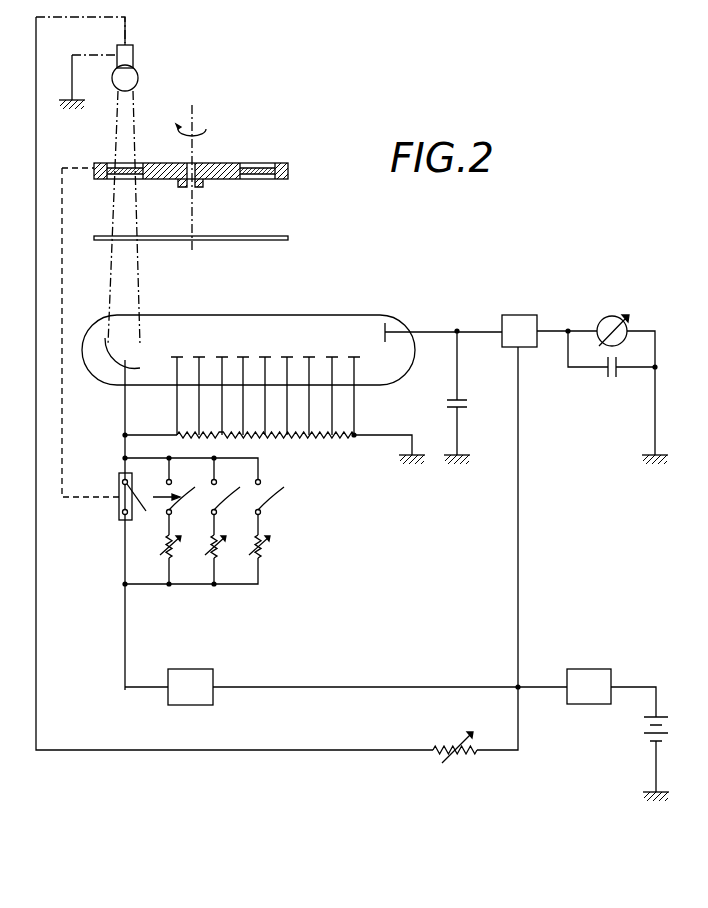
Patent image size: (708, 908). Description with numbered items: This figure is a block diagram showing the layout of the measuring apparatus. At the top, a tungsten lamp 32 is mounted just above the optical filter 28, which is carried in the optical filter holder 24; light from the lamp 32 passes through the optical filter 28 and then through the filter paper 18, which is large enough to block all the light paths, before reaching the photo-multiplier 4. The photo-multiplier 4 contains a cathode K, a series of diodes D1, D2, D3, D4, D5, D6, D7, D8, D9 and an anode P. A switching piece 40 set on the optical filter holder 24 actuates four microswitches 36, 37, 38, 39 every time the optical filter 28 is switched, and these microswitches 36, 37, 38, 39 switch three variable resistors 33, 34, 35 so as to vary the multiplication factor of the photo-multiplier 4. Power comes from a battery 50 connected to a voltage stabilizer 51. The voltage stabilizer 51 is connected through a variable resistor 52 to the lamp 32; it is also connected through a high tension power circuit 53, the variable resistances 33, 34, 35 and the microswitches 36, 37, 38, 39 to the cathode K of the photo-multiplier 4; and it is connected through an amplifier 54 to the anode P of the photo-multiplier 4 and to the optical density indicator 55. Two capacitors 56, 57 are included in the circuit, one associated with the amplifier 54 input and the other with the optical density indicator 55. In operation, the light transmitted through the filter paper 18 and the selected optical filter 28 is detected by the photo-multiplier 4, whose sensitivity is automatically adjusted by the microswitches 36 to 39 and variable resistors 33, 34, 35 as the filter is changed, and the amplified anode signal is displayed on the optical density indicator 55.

The tungsten lamp 32 is at (138, 74).
The optical filter holder 24 is at (212, 162).
The optical filter 28 is at (256, 164).
The filter paper 18 is at (282, 235).
The photo-multiplier 4 is at (406, 378).
The cathode K is at (104, 354).
The anode P is at (390, 331).
The diode D1 is at (177, 356).
The diode D2 is at (199, 356).
The diode D3 is at (222, 356).
The diode D4 is at (243, 356).
The diode D5 is at (265, 356).
The diode D6 is at (287, 356).
The diode D7 is at (309, 356).
The diode D8 is at (332, 356).
The diode D9 is at (354, 356).
The switching piece 40 is at (118, 500).
The microswitch 36 is at (128, 512).
The microswitch 37 is at (172, 482).
The microswitch 38 is at (217, 482).
The microswitch 39 is at (261, 482).
The variable resistor 33 is at (175, 556).
The variable resistor 34 is at (220, 556).
The variable resistor 35 is at (264, 556).
The high tension power circuit 53 is at (213, 695).
The voltage stabilizer 51 is at (592, 669).
The battery 50 is at (646, 738).
The variable resistor 52 is at (456, 762).
The amplifier 54 is at (518, 315).
The capacitor 56 is at (476, 397).
The optical density indicator 55 is at (601, 318).
The capacitor 57 is at (608, 380).